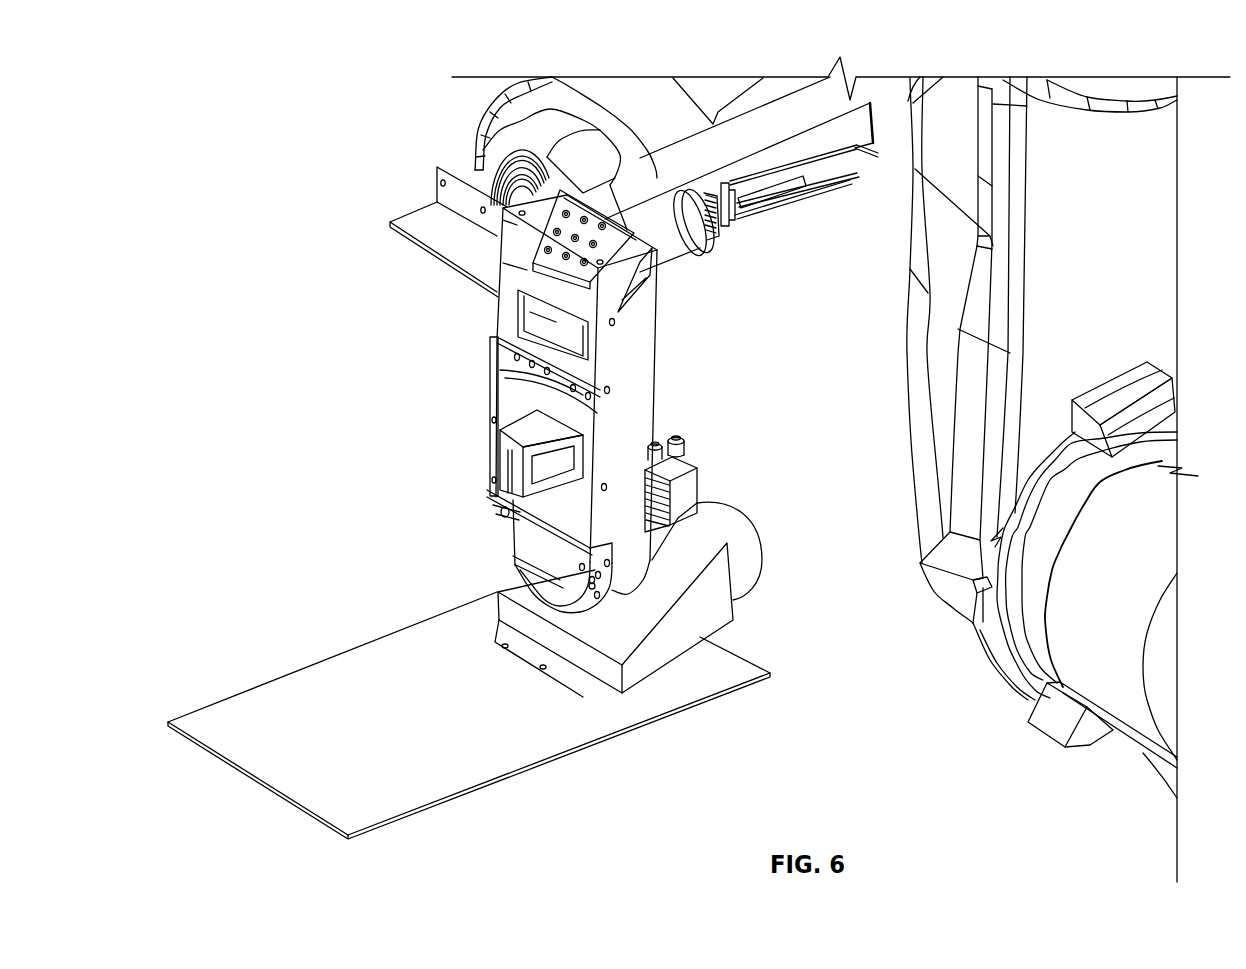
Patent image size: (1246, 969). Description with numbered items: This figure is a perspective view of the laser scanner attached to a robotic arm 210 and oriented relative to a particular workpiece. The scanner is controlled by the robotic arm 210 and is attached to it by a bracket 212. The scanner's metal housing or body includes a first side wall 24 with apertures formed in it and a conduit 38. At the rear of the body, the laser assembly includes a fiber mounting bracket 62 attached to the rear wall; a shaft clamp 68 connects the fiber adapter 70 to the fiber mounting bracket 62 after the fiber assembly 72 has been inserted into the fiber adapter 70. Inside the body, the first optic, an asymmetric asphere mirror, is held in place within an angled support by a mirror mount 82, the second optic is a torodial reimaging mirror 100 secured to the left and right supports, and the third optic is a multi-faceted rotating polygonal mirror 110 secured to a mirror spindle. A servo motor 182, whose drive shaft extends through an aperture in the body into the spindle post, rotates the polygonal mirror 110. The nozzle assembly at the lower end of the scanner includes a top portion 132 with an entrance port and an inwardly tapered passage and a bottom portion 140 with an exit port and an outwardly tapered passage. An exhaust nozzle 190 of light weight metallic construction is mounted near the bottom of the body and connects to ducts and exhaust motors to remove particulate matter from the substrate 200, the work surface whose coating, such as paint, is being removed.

The first side wall 24 is at (637, 440).
The conduit 38 is at (560, 334).
The fiber mounting bracket 62 is at (677, 258).
The shaft clamp 68 is at (707, 262).
The fiber adapter 70 is at (723, 232).
The fiber assembly 72 is at (813, 197).
The mirror mount 82 is at (528, 272).
The torodial reimaging mirror 100 is at (500, 378).
The multi-faceted rotating polygonal mirror 110 is at (592, 587).
The top portion 132 is at (534, 478).
The bottom portion 140 is at (524, 564).
The servo motor 182 is at (697, 488).
The exhaust nozzle 190 is at (744, 620).
The substrate 200 is at (304, 668).
The robotic arm 210 is at (478, 121).
The bracket 212 is at (412, 210).